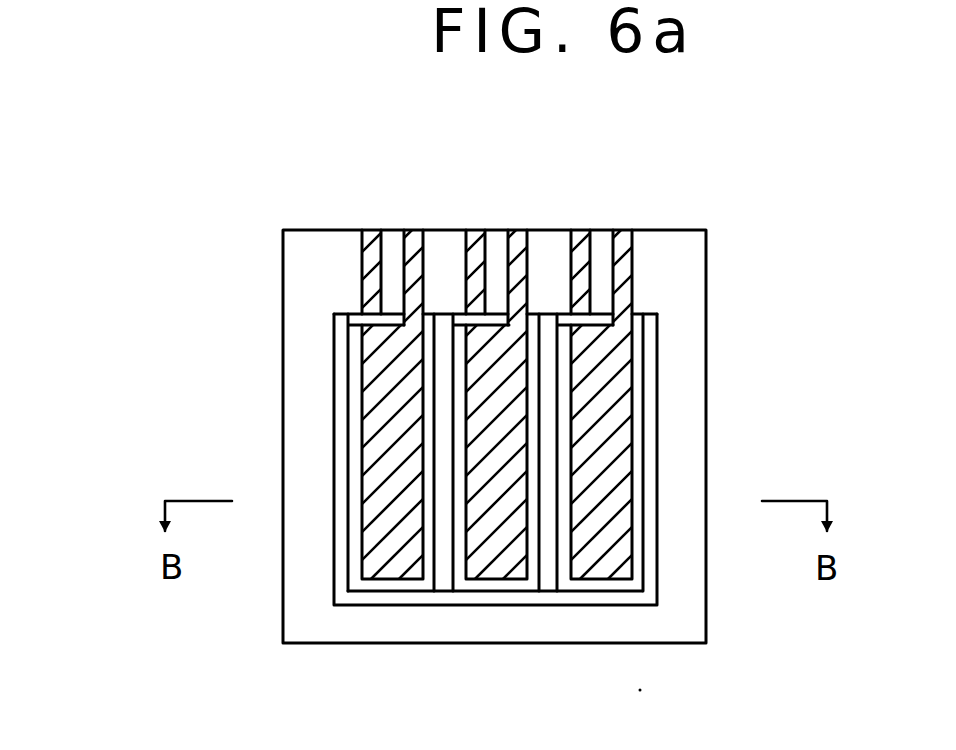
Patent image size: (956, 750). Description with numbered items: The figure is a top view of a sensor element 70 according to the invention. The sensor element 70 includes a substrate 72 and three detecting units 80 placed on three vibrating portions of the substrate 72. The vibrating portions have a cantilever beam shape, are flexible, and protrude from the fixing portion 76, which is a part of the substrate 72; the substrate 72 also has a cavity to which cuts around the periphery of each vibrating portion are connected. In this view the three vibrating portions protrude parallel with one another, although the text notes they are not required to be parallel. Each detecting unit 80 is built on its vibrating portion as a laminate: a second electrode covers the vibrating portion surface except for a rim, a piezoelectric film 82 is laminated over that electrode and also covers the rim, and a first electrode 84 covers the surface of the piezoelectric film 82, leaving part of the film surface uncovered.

The sensor element 70 is at (495, 389).
The substrate 72 is at (685, 278).
The fixing portion 76 is at (445, 243).
The detecting unit 80 is at (495, 417).
The piezoelectric film 82 is at (633, 362).
The first electrode 84 is at (620, 410).